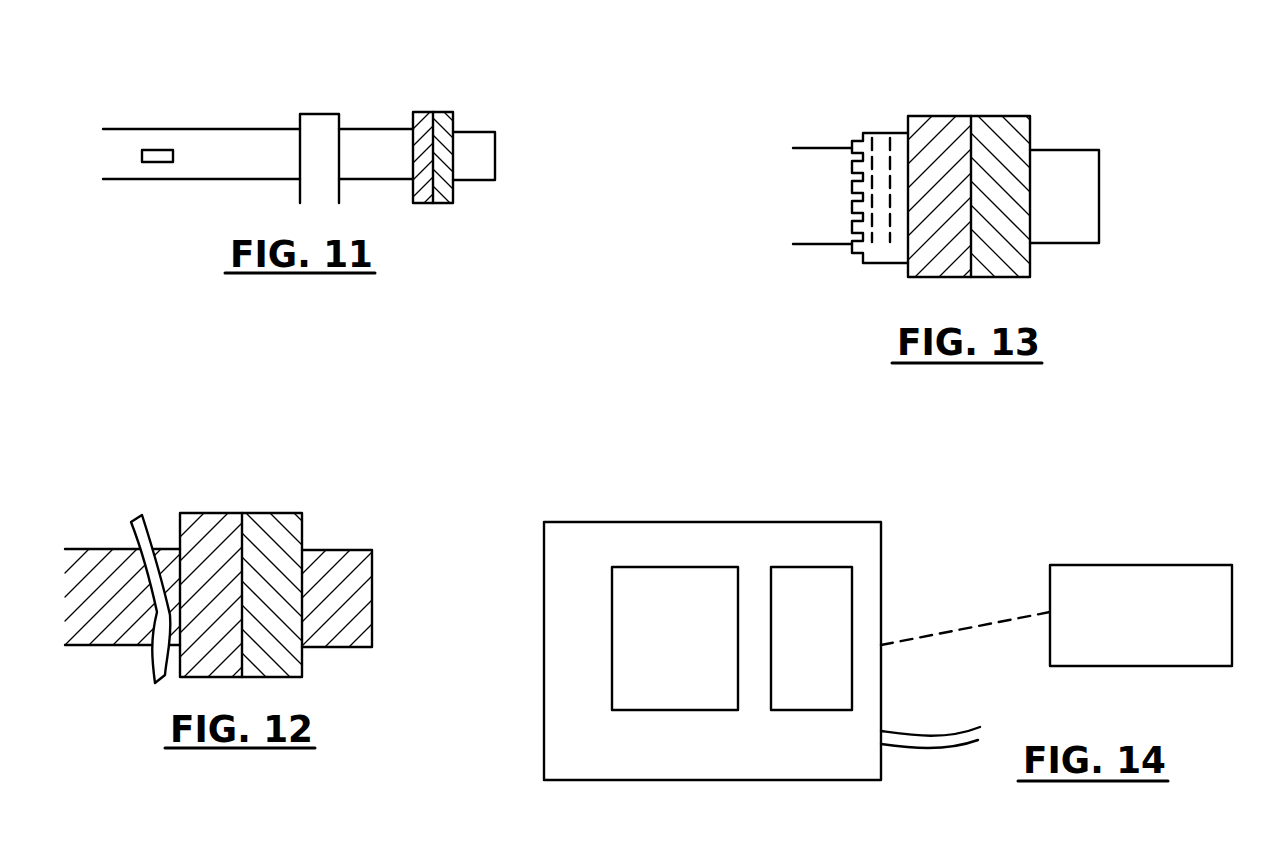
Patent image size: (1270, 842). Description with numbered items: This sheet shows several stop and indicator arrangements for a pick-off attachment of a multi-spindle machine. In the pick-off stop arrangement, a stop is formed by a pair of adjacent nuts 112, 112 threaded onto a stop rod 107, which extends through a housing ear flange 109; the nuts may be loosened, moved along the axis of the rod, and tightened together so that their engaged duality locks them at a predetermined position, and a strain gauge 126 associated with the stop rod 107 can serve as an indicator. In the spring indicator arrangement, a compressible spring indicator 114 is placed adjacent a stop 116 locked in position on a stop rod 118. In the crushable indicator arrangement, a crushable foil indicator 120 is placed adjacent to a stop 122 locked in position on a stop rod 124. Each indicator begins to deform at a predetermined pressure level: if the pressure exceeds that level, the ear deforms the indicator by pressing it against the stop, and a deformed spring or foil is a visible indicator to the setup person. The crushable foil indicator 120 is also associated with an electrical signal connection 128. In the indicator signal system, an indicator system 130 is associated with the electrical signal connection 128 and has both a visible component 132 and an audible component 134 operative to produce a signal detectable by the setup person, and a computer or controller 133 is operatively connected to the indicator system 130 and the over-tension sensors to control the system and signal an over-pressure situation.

In FIG. 11, the stop rod 107 is at (253, 129).
In FIG. 11, the housing ear flange 109 is at (331, 114).
In FIG. 11, the adjacent nuts 112 is at (422, 112).
In FIG. 11, the strain gauge 126 is at (157, 150).
In FIG. 12, the compressible spring indicator 114 is at (150, 515).
In FIG. 12, the stop 116 is at (288, 525).
In FIG. 12, the stop rod 118 is at (365, 585).
In FIG. 13, the crushable foil indicator 120 is at (858, 263).
In FIG. 13, the stop 122 is at (953, 116).
In FIG. 13, the stop rod 124 is at (1082, 162).
In FIG. 13, the electrical signal connection 128 is at (881, 67).
In FIG. 14, the electrical signal connection 128 is at (935, 730).
In FIG. 14, the indicator system 130 is at (881, 535).
In FIG. 14, the visible component 132 is at (703, 637).
In FIG. 14, the computer or controller 133 is at (1172, 622).
In FIG. 14, the audible component 134 is at (840, 638).